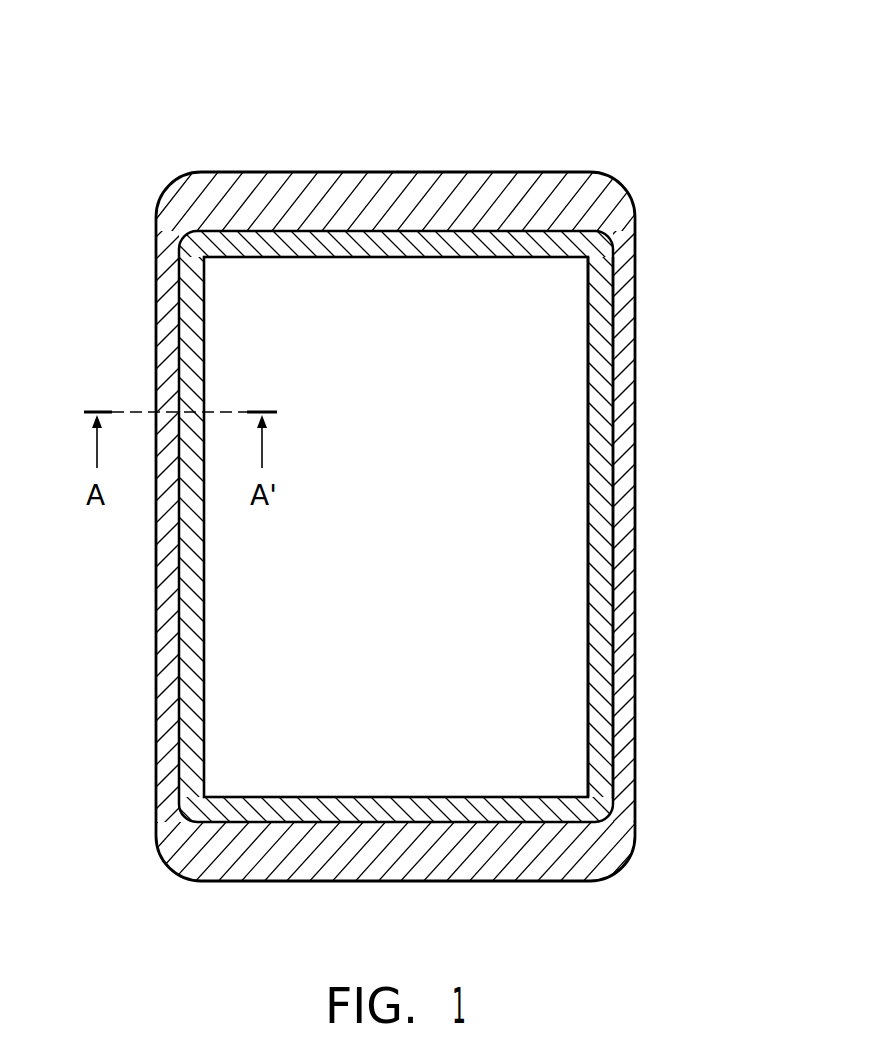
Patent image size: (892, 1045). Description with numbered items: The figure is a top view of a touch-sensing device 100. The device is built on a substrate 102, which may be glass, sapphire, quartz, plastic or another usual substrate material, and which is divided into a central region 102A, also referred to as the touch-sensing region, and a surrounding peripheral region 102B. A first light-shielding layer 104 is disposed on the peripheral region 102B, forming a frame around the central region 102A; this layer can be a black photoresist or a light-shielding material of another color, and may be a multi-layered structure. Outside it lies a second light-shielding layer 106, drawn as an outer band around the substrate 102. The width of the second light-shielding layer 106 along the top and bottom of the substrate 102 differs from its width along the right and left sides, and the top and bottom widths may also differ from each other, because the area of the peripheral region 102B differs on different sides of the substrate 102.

The touch-sensing device 100 is at (428, 450).
The substrate 102 is at (422, 651).
The central region 102A is at (548, 400).
The peripheral region 102B is at (609, 477).
The first light-shielding layer 104 is at (448, 243).
The second light-shielding layer 106 is at (327, 183).